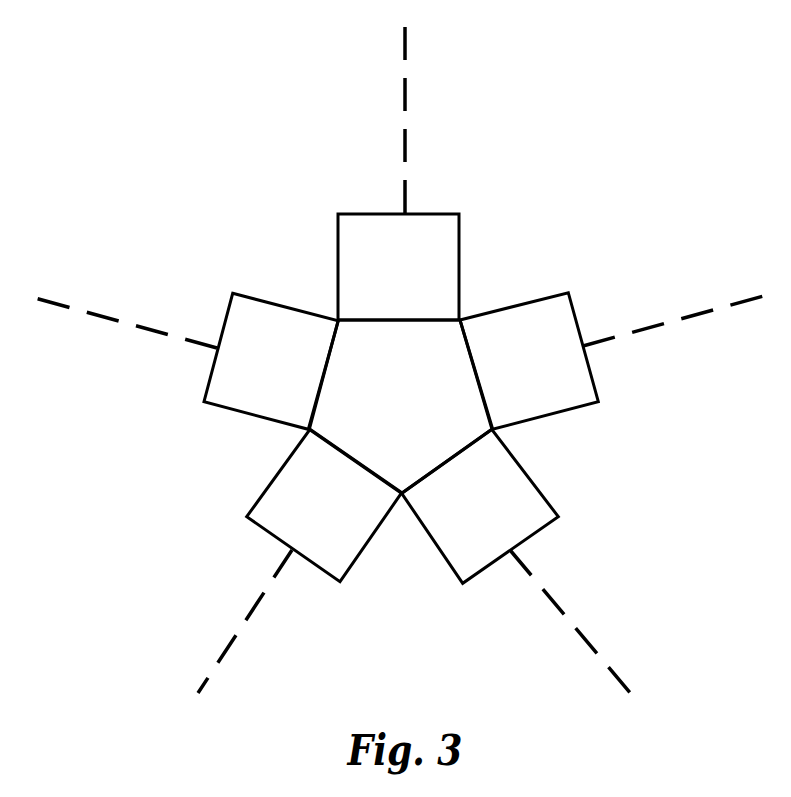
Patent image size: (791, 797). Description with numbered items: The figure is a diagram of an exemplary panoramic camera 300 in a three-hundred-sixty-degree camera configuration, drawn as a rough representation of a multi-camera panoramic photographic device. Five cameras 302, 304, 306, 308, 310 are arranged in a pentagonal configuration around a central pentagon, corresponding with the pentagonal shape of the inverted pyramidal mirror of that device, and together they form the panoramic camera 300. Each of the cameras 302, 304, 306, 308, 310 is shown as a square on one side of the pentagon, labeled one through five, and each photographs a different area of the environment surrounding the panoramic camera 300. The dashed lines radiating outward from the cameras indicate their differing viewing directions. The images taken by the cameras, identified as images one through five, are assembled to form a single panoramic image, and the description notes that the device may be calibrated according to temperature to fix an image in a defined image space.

The panoramic camera 300 is at (401, 359).
The camera 302 is at (338, 213).
The camera 304 is at (568, 293).
The camera 306 is at (233, 293).
The camera 308 is at (557, 516).
The camera 310 is at (247, 517).